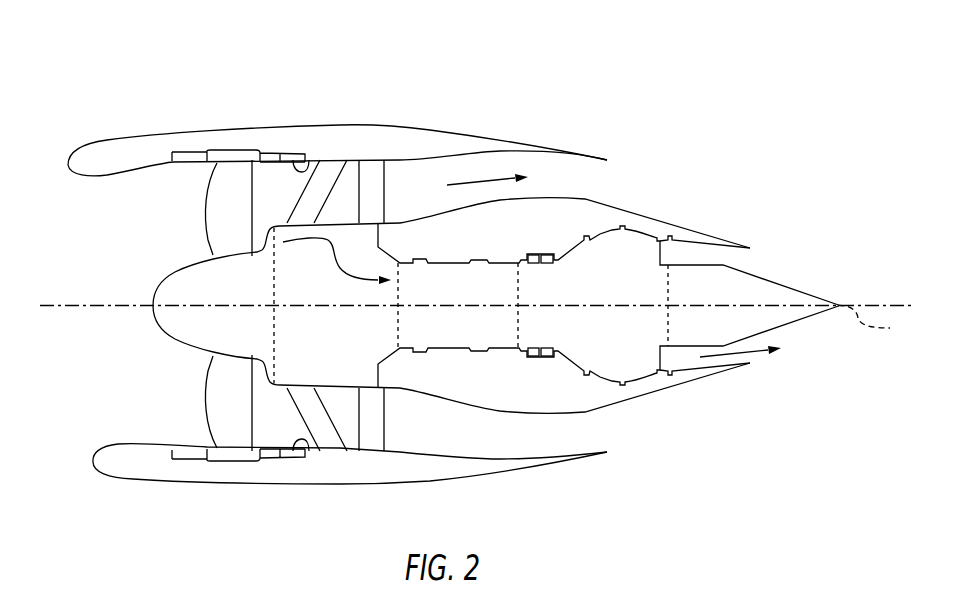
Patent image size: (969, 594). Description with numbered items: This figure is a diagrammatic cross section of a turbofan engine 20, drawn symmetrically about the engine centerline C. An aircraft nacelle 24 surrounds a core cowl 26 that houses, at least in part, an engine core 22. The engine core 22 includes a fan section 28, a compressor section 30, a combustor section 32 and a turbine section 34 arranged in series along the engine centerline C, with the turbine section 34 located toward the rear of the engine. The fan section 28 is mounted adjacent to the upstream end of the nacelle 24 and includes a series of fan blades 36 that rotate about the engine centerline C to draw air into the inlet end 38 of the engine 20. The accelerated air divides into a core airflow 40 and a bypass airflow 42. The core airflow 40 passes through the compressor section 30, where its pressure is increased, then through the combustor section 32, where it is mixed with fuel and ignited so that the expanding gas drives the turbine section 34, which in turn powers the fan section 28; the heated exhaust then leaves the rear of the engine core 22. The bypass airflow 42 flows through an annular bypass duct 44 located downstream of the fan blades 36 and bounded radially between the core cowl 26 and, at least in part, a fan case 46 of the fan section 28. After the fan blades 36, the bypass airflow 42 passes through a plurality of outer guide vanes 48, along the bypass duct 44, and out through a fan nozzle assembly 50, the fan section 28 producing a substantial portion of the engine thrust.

The turbofan engine 20 is at (773, 126).
The engine core 22 is at (487, 352).
The aircraft nacelle 24 is at (447, 125).
The core cowl 26 is at (603, 203).
The fan section 28 is at (233, 292).
The compressor section 30 is at (341, 352).
The combustor section 32 is at (471, 336).
The turbine section 34 is at (615, 295).
The fan blades 36 is at (213, 393).
The inlet end 38 is at (95, 455).
The core airflow 40 is at (323, 256).
The bypass airflow 42 is at (481, 184).
The bypass duct 44 is at (586, 192).
The fan case 46 is at (306, 172).
The outer guide vanes 48 is at (325, 432).
The fan nozzle assembly 50 is at (614, 156).
The engine centerline C is at (872, 336).